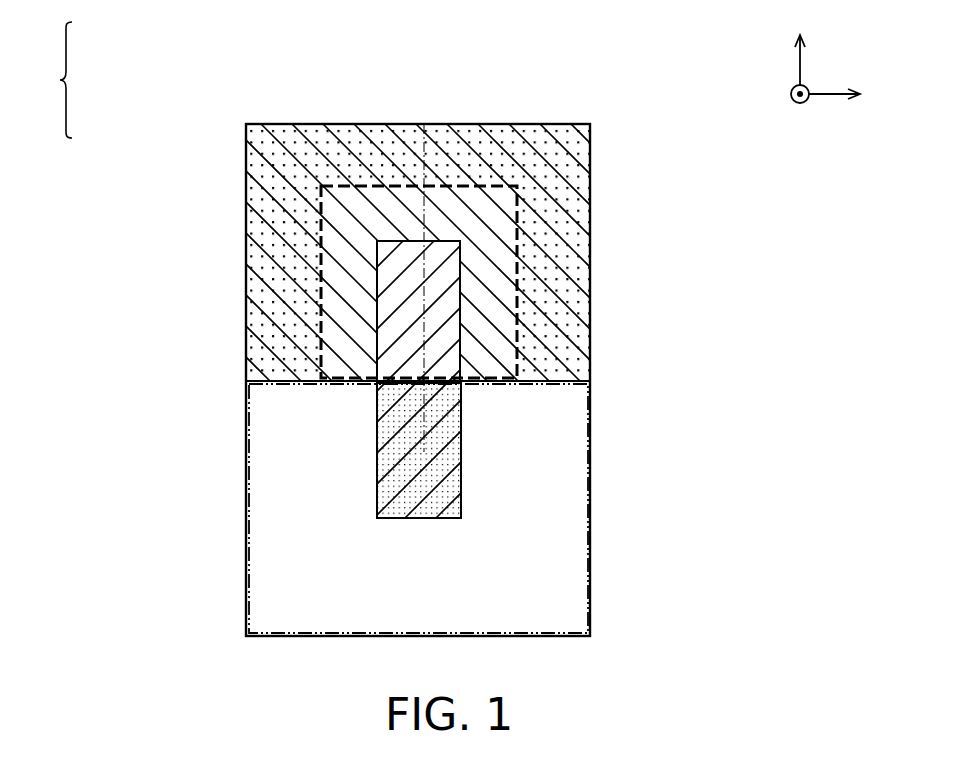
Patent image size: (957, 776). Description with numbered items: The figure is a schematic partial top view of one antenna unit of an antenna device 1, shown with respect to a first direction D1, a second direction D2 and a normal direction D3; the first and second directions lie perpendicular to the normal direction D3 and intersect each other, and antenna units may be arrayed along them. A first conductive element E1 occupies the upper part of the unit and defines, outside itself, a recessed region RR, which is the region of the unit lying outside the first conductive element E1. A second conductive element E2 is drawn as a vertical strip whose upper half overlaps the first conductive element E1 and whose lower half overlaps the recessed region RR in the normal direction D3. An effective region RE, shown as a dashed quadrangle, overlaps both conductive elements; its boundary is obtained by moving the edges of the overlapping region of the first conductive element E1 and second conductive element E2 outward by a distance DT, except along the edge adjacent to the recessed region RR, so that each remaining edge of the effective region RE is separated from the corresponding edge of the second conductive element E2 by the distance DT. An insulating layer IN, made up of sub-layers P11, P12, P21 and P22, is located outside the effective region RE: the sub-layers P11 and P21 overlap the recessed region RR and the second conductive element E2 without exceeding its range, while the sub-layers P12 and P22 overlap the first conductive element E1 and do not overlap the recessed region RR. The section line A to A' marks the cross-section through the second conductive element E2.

The antenna device 1 is at (718, 673).
The insulating layer IN is at (79, 78).
The sub-layer P11 is at (590, 450).
The sub-layer P12 is at (420, 252).
The sub-layer P21 is at (438, 422).
The sub-layer P22 is at (567, 167).
The first conductive element E1 is at (472, 212).
The second conductive element E2 is at (590, 450).
The effective region RE is at (517, 274).
The recessed region RR is at (590, 559).
The distance DT is at (392, 186).
The section line A is at (376, 154).
The section line A' is at (375, 458).
The first direction D1 is at (848, 95).
The second direction D2 is at (802, 46).
The normal direction D3 is at (802, 111).